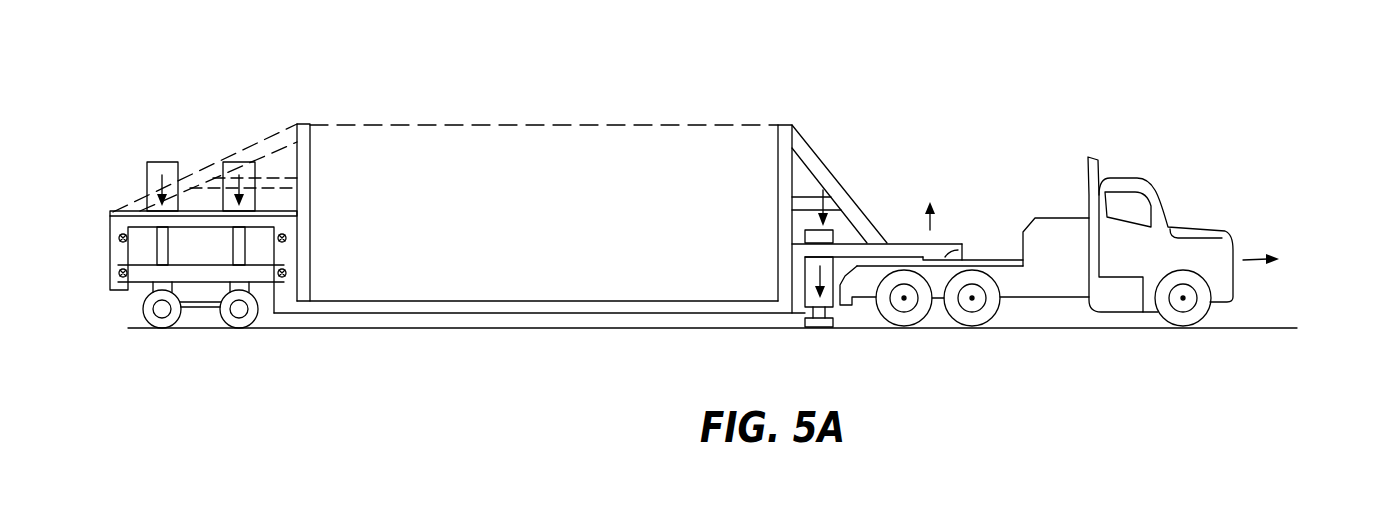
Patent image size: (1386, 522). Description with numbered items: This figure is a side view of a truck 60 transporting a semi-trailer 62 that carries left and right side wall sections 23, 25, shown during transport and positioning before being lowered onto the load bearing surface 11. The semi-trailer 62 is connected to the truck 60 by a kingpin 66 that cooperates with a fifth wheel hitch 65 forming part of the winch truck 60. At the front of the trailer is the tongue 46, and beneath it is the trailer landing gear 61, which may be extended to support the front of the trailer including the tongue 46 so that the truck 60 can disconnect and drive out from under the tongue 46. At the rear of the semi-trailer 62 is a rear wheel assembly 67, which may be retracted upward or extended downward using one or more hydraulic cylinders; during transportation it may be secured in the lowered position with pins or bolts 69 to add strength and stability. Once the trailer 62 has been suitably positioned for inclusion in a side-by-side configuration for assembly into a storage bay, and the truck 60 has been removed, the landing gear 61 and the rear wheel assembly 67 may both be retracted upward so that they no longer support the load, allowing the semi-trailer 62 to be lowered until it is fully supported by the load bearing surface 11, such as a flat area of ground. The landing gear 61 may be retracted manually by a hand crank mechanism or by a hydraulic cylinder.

The load bearing surface 11 is at (1277, 327).
The left side wall section 23 is at (311, 162).
The right side wall section 25 is at (778, 162).
The tongue 46 is at (893, 243).
The truck 60 is at (1128, 178).
The landing gear 61 is at (824, 189).
The semi-trailer 62 is at (539, 174).
The fifth wheel hitch 65 is at (941, 259).
The kingpin 66 is at (929, 244).
The rear wheel assembly 67 is at (206, 243).
The pins or bolts 69 is at (119, 272).